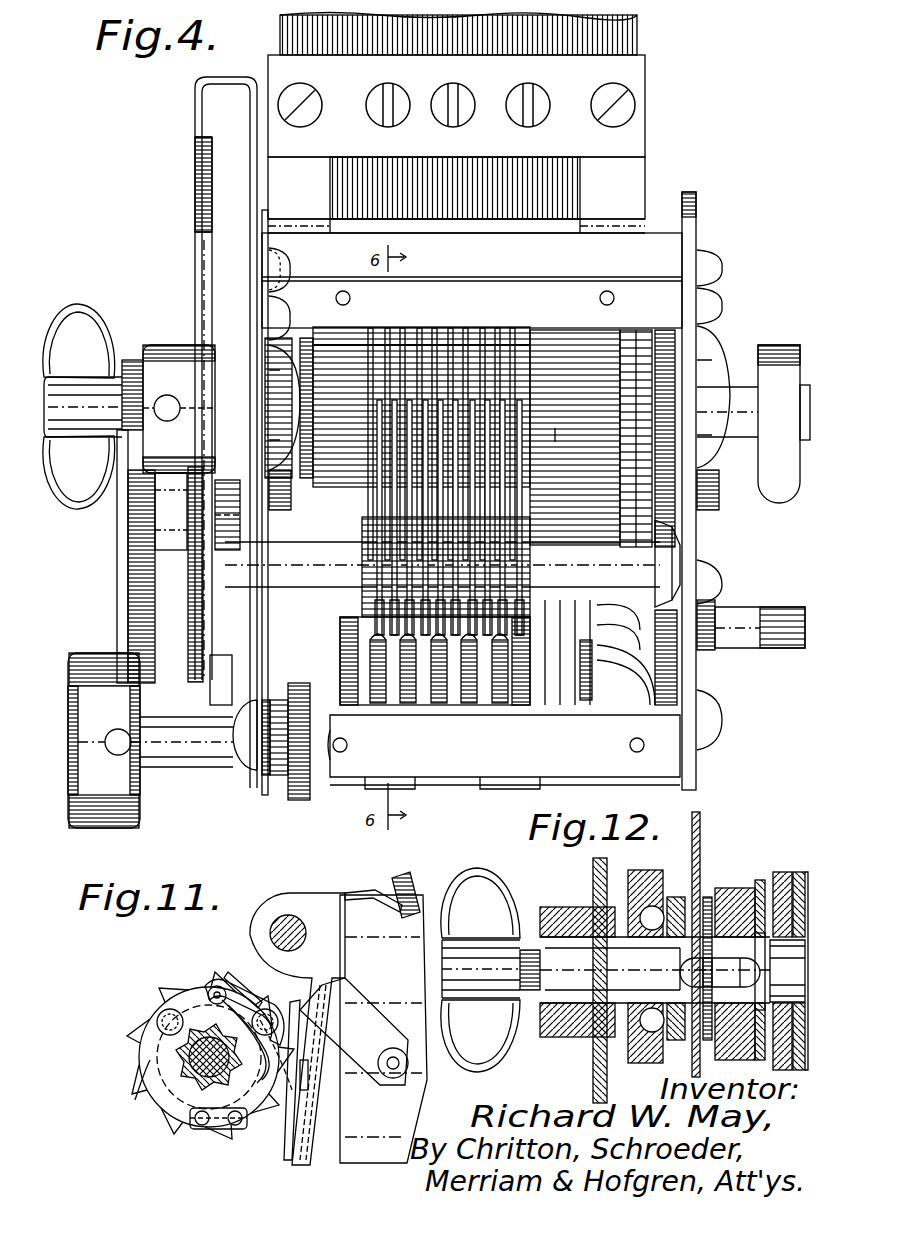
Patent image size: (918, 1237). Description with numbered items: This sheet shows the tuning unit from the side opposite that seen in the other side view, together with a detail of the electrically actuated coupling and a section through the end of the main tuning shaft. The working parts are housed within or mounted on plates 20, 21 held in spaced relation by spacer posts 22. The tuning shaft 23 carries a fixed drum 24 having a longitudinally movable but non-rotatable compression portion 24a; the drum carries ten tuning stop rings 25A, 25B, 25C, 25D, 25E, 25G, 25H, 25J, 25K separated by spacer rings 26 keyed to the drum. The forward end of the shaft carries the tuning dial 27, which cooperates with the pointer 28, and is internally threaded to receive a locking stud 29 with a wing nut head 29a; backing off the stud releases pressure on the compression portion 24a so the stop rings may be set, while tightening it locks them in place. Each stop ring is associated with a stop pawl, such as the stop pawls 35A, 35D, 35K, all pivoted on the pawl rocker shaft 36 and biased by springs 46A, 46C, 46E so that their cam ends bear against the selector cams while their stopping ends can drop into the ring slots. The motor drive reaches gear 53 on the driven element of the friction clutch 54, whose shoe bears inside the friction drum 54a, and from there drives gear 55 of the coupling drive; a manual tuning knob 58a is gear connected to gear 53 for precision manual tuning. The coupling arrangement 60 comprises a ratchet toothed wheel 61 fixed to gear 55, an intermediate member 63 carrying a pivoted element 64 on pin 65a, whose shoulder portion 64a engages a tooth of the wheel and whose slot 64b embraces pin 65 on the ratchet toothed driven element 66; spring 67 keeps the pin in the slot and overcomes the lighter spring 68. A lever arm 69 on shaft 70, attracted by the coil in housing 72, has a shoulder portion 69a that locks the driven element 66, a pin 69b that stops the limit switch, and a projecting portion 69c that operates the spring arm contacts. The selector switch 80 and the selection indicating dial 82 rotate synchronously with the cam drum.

In FIG. 4, the plate 20 is at (698, 206).
In FIG. 12, the plate 21 is at (668, 868).
In FIG. 4, the spacer post 22 is at (655, 290).
In FIG. 4, the tuning shaft 23 is at (737, 390).
In FIG. 12, the tuning shaft 23 is at (742, 971).
In FIG. 12, the drum 24 is at (810, 880).
In FIG. 12, the compression portion 24a is at (733, 888).
In FIG. 4, the tuning stop ring 25A is at (371, 330).
In FIG. 12, the tuning stop ring 25A is at (782, 872).
In FIG. 4, the tuning stop ring 25B is at (388, 328).
In FIG. 12, the tuning stop ring 25B is at (798, 872).
In FIG. 4, the tuning stop ring 25C is at (403, 330).
In FIG. 4, the tuning stop ring 25D is at (421, 328).
In FIG. 4, the tuning stop ring 25E is at (436, 330).
In FIG. 4, the tuning stop ring 25G is at (452, 328).
In FIG. 4, the tuning stop ring 25H is at (467, 328).
In FIG. 4, the tuning stop ring 25J is at (483, 330).
In FIG. 4, the tuning stop ring 25K is at (514, 330).
In FIG. 12, the spacer ring 26 is at (775, 872).
In FIG. 4, the tuning dial 27 is at (197, 198).
In FIG. 12, the tuning dial 27 is at (590, 872).
In FIG. 4, the pointer 28 is at (198, 116).
In FIG. 4, the locking stud 29 is at (146, 392).
In FIG. 12, the locking stud 29 is at (530, 950).
In FIG. 4, the wing nut head 29a is at (84, 322).
In FIG. 12, the wing nut head 29a is at (477, 882).
In FIG. 4, the stop pawl 35A is at (376, 500).
In FIG. 4, the stop pawl 35D is at (420, 403).
In FIG. 4, the stop pawl 35K is at (486, 405).
In FIG. 4, the pawl rocker shaft 36 is at (318, 549).
In FIG. 4, the spring 46A is at (358, 696).
In FIG. 4, the spring 46C is at (438, 705).
In FIG. 4, the spring 46E is at (470, 705).
In FIG. 4, the gear 53 is at (636, 378).
In FIG. 4, the friction clutch 54 is at (663, 488).
In FIG. 4, the friction drum 54a is at (559, 423).
In FIG. 4, the gear 55 is at (662, 686).
In FIG. 4, the tuning knob 58a is at (84, 655).
In FIG. 11, the coupling arrangement 60 is at (156, 992).
In FIG. 11, the ratchet toothed wheel 61 is at (190, 1068).
In FIG. 11, the intermediate member 63 is at (156, 1033).
In FIG. 11, the pivoted element 64 is at (232, 978).
In FIG. 11, the shoulder portion 64a is at (286, 1150).
In FIG. 11, the slot 64b is at (214, 986).
In FIG. 11, the pin 65 is at (213, 990).
In FIG. 11, the pin 65a is at (262, 1000).
In FIG. 11, the ratchet toothed driven element 66 is at (152, 1118).
In FIG. 11, the spring 67 is at (158, 1052).
In FIG. 11, the spring 68 is at (258, 1145).
In FIG. 11, the lever arm 69 is at (312, 1118).
In FIG. 11, the shoulder portion 69a is at (312, 1075).
In FIG. 11, the pin 69b is at (395, 1056).
In FIG. 11, the projecting portion 69c is at (393, 888).
In FIG. 11, the shaft 70 is at (290, 915).
In FIG. 11, the housing 72 is at (345, 1152).
In FIG. 4, the selector switch 80 is at (619, 665).
In FIG. 4, the selection indicating dial 82 is at (126, 590).